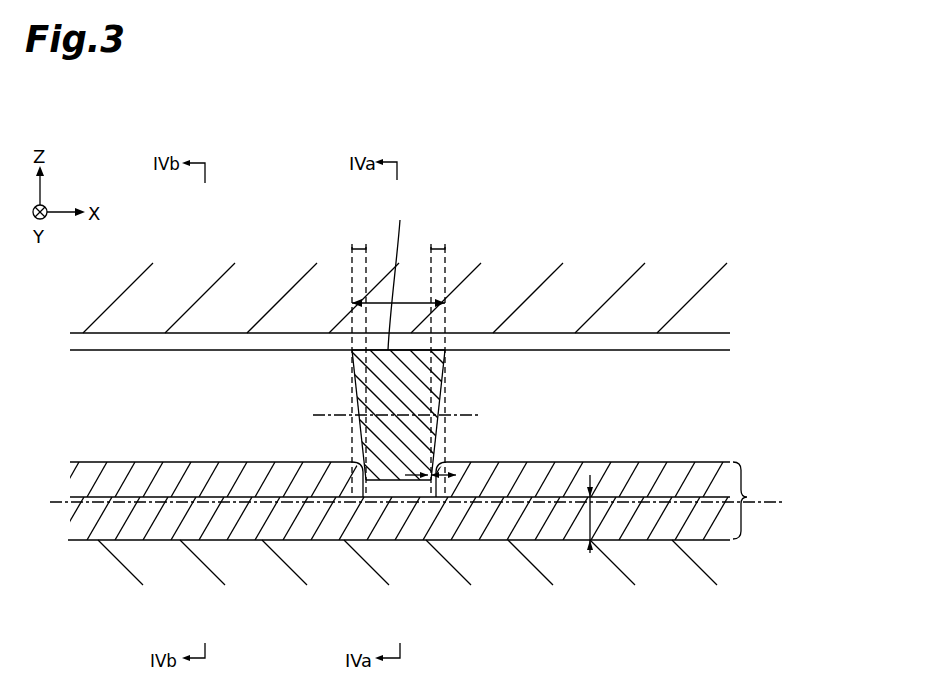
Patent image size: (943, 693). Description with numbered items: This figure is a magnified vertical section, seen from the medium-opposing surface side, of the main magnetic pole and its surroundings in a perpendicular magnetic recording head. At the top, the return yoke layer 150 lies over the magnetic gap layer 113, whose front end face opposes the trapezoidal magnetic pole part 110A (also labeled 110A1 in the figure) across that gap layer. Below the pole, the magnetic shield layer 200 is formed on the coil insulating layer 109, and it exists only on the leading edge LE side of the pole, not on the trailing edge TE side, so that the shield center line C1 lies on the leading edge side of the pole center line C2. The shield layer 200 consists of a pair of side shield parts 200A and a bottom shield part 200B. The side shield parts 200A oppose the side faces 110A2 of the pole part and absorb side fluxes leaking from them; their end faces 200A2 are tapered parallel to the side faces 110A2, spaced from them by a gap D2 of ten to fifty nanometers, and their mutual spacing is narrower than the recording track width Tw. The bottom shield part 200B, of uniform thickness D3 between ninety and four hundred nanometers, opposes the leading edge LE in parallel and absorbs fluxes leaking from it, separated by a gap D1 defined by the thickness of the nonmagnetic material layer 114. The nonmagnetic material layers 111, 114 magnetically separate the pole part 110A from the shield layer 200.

The return yoke layer 150 is at (707, 285).
The magnetic gap layer 113 is at (700, 343).
The nonmagnetic material layer 111 is at (700, 378).
The magnetic pole part 110A is at (401, 396).
The blade body 110A1 is at (401, 426).
The side faces 110A2 is at (563, 240).
The trailing edge TE is at (397, 273).
The leading edge LE is at (367, 483).
The recording track width Tw is at (398, 293).
The center line of magnetic pole part C2 is at (412, 414).
The magnetic shield layer 200 is at (443, 524).
The side shield parts 200A is at (405, 454).
The end faces 200A2 is at (352, 461).
The bottom shield part 200B is at (405, 498).
The nonmagnetic material layer 114 is at (383, 498).
The center line of magnetic shield layer C1 is at (430, 502).
The gap between bottom shield part and leading edge D1 is at (428, 478).
The gap between end face and side face D2 is at (444, 478).
The thickness of bottom shield part D3 is at (590, 522).
The coil insulating layer 109 is at (697, 560).